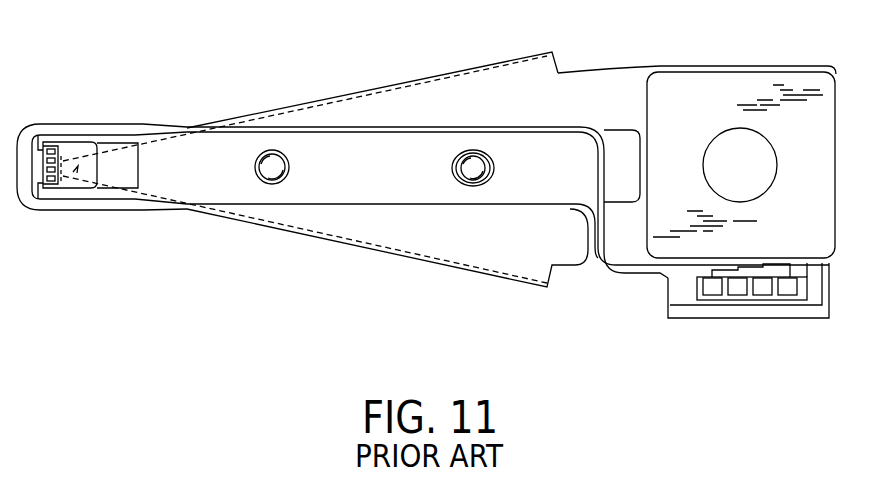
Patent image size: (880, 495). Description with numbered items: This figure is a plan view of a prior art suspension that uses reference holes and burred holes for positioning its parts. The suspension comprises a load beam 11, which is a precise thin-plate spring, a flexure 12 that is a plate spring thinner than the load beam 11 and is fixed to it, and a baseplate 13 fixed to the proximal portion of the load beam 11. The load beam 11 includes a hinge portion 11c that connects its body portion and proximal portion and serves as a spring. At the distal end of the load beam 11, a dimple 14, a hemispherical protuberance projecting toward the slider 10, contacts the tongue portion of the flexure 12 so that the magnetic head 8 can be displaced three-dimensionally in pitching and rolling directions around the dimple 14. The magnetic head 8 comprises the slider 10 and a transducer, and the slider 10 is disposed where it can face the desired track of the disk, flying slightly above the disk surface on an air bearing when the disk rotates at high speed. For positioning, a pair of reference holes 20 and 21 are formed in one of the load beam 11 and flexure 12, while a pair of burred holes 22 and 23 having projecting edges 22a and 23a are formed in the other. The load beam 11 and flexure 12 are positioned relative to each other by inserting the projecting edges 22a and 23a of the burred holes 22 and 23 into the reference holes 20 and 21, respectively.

The magnetic head 8 is at (64, 116).
The slider 10 is at (83, 150).
The dimple 14 is at (68, 180).
The load beam 11 is at (408, 98).
The hinge portion 11c is at (615, 85).
The flexure 12 is at (350, 147).
The baseplate 13 is at (703, 90).
The reference hole 20 is at (273, 172).
The reference hole 21 is at (472, 182).
The burred hole 22 is at (272, 156).
The projecting edge 22a is at (282, 158).
The burred hole 23 is at (472, 160).
The projecting edge 23a is at (490, 166).